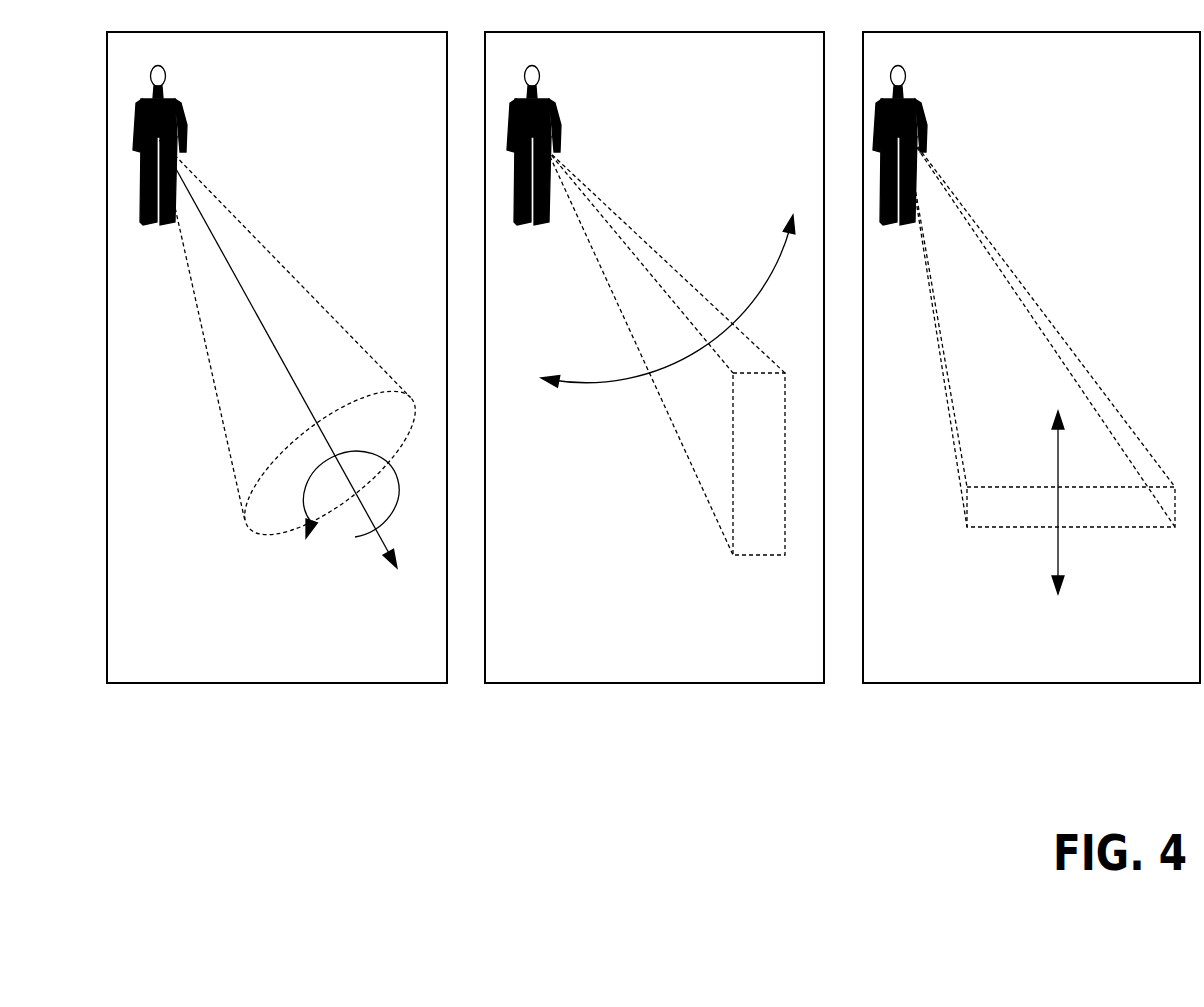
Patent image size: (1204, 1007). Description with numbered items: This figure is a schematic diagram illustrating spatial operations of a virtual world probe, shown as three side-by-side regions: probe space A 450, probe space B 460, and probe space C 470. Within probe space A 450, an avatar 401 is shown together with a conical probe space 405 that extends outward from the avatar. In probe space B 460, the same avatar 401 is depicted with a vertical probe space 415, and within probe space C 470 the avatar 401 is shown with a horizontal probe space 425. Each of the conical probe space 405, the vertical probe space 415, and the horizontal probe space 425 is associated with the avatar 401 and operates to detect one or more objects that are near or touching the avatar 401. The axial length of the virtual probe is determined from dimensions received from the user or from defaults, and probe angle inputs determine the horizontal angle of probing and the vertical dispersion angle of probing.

The avatar 401 is at (180, 112).
The conical probe space 405 is at (266, 262).
The vertical probe space 415 is at (658, 263).
The horizontal probe space 425 is at (995, 262).
The probe space A 450 is at (405, 674).
The probe space B 460 is at (786, 674).
The probe space C 470 is at (1160, 674).